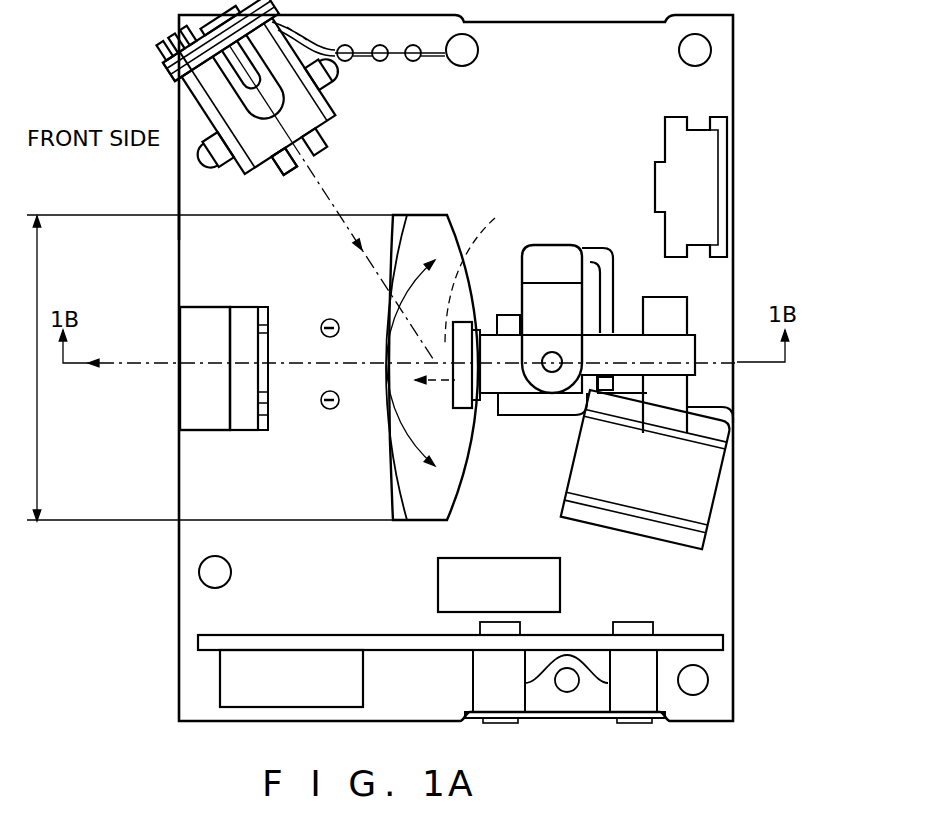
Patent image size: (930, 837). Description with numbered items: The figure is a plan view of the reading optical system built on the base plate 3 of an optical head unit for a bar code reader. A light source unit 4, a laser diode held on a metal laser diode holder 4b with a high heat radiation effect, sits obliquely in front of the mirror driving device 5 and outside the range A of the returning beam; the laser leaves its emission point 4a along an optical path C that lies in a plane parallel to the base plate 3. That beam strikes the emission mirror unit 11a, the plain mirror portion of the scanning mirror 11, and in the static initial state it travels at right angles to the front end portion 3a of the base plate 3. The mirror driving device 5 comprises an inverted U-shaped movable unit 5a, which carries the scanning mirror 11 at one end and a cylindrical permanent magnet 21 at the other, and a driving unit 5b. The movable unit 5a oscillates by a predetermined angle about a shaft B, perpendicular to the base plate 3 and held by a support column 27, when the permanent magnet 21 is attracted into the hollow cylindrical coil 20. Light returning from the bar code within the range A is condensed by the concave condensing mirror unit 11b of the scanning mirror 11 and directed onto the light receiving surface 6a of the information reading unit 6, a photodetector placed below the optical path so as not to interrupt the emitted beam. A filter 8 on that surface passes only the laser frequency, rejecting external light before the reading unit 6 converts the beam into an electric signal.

The base plate 3 is at (735, 42).
The front end portion of the base plate 3a is at (172, 182).
The light source unit 4 is at (276, 62).
The emission point 4a is at (297, 172).
The laser diode holder 4b is at (186, 70).
The mirror driving device 5 is at (567, 443).
The movable unit 5a is at (490, 340).
The driving unit 5b is at (702, 392).
The information reading unit 6 is at (248, 307).
The light receiving surface 6a is at (266, 420).
The filter 8 is at (266, 312).
The scanning mirror 11 is at (452, 217).
The emission mirror unit 11a is at (477, 292).
The condensing mirror unit 11b is at (407, 453).
The coil 20 is at (705, 483).
The permanent magnet 21 is at (650, 295).
The support column 27 is at (576, 246).
The range of the return beam A is at (38, 285).
The shaft B is at (546, 380).
The laser beam optical path C is at (143, 365).